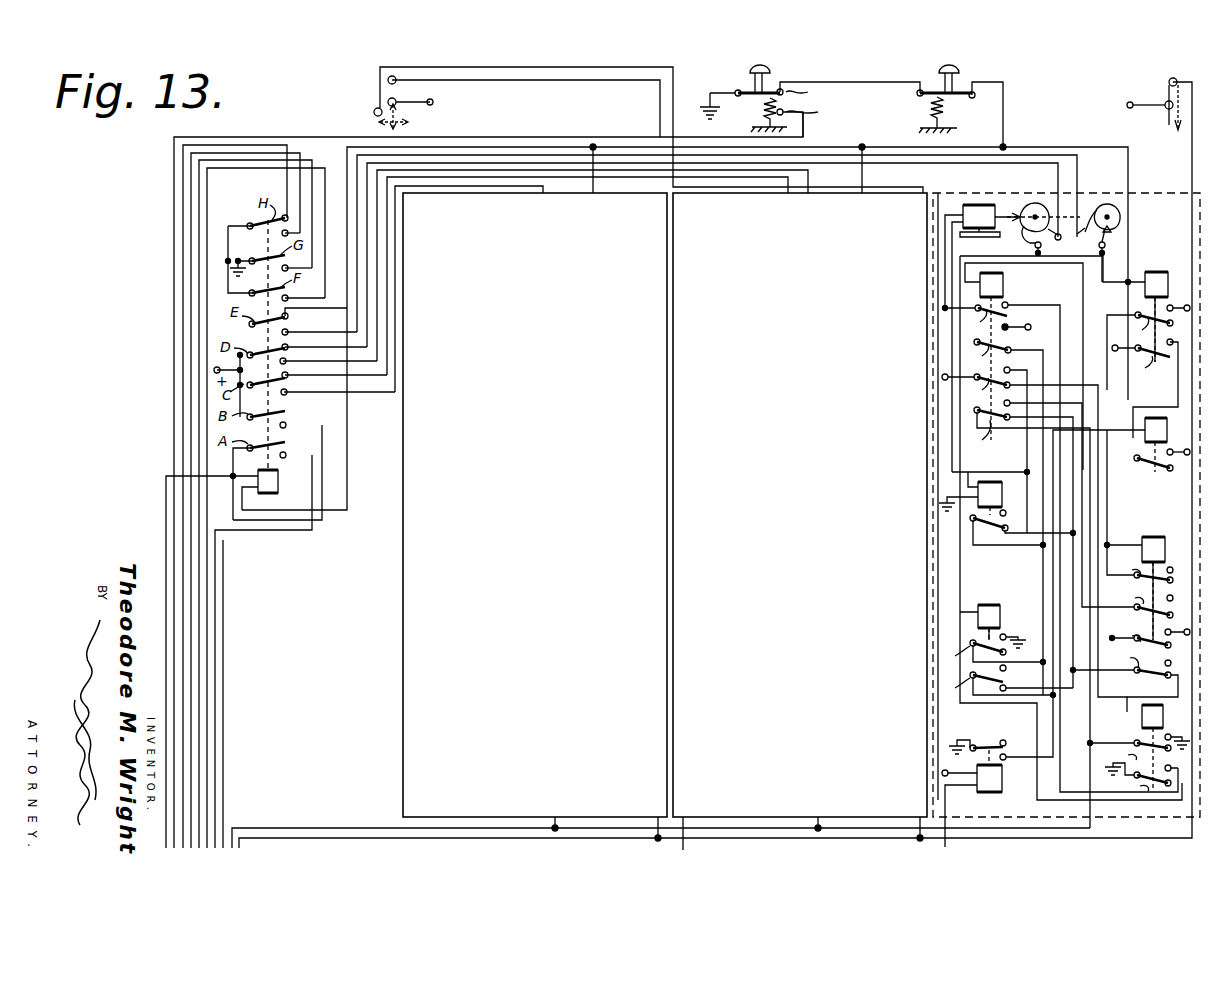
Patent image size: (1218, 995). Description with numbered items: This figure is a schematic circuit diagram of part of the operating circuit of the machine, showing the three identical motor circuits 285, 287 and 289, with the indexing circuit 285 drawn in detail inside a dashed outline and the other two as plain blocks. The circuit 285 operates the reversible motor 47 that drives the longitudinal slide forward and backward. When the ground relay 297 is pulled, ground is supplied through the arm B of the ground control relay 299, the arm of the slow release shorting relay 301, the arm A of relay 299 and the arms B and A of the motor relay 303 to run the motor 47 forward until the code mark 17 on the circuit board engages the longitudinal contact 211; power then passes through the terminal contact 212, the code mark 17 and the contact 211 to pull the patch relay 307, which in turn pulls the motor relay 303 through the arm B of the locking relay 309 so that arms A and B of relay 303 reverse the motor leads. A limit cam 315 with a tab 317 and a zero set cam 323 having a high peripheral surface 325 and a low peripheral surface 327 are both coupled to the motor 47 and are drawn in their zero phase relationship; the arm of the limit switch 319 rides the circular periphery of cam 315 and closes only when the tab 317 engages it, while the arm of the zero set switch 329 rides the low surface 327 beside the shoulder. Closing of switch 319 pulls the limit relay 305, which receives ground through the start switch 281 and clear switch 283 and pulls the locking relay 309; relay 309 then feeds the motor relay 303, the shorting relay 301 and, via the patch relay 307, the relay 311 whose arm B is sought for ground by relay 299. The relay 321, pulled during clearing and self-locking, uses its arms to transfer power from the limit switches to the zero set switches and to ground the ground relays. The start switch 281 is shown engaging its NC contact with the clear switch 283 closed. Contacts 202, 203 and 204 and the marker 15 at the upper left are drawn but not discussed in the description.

The selector switch arrow 15 is at (408, 112).
The code mark 17 is at (1172, 130).
The motor 47 is at (979, 205).
The terminal 202 is at (380, 76).
The terminal 203 is at (374, 112).
The terminal 204 is at (400, 92).
The longitudinal contact 211 is at (1169, 77).
The terminal contact 212 is at (1165, 100).
The start switch 281 is at (752, 90).
The clear switch 283 is at (950, 97).
The motor circuit 285 is at (1183, 185).
The motor circuit 287 is at (930, 182).
The motor circuit 289 is at (650, 190).
The ground relay 297 is at (990, 792).
The ground control relay 299 is at (990, 605).
The shorting relay 301 is at (990, 482).
The motor relay 303 is at (1003, 285).
The limit relay 305 is at (1166, 268).
The patch relay 307 is at (1158, 418).
The locking relay 309 is at (1160, 529).
The relay 311 is at (1141, 725).
The limit cam 315 is at (1126, 227).
The tab 317 is at (1108, 204).
The limit switch 319 is at (1094, 210).
The relay 321 is at (270, 493).
The zero set cam 323 is at (1014, 222).
The high peripheral surface 325 is at (1038, 203).
The low peripheral surface 327 is at (1024, 234).
The zero set switch 329 is at (1083, 261).